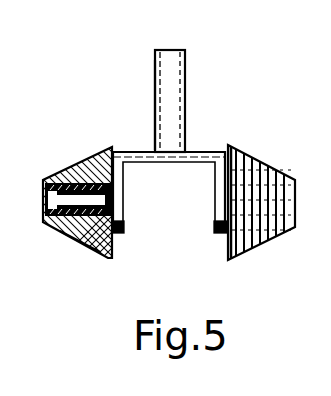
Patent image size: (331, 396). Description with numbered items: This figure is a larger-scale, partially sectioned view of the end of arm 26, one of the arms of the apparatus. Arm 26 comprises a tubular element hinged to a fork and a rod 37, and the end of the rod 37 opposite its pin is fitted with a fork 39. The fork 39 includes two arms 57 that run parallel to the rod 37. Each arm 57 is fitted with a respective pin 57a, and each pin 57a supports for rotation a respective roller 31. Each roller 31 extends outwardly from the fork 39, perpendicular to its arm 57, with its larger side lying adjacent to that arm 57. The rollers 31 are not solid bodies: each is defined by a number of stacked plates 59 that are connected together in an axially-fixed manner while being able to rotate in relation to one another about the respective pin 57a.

The arm 26 is at (152, 102).
The rod 37 is at (175, 95).
The fork 39 is at (199, 147).
The arm of fork 57 is at (117, 231).
The pin 57a is at (60, 240).
The stacked plates 59 is at (84, 160).
The roller 31 is at (224, 242).